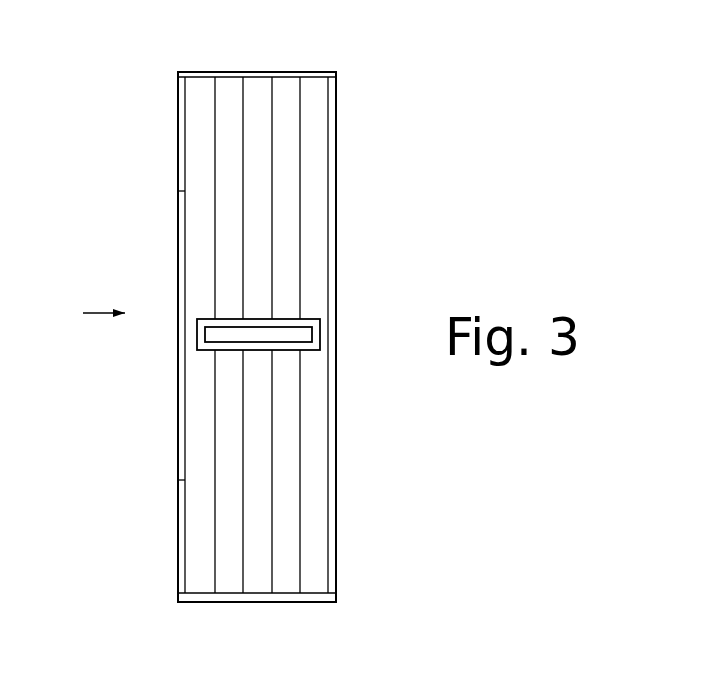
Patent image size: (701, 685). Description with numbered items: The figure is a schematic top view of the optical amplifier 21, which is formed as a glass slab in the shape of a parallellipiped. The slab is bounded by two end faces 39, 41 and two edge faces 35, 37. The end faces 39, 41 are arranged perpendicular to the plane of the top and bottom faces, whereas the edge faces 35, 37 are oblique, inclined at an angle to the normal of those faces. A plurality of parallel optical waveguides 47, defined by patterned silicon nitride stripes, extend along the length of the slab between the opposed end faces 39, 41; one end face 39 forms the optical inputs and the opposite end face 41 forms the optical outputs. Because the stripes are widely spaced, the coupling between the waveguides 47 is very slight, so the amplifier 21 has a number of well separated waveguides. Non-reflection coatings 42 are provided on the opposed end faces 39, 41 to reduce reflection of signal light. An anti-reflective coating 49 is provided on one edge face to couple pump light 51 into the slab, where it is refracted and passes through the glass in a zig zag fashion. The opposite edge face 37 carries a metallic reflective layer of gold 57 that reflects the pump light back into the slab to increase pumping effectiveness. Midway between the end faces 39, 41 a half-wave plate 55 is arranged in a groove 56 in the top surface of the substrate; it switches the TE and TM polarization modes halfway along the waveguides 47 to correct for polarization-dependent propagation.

The optical amplifier 21 is at (350, 102).
The edge face 35 is at (178, 533).
The edge face 37 is at (335, 327).
The end face 39 is at (313, 595).
The end face 41 is at (313, 75).
The non-reflection coating 42 is at (207, 71).
The optical waveguide 47 is at (303, 501).
The anti-reflective coating 49 is at (178, 260).
The pump light 51 is at (97, 311).
The half-wave plate 55 is at (273, 327).
The groove 56 is at (325, 342).
The gold reflective layer 57 is at (178, 130).